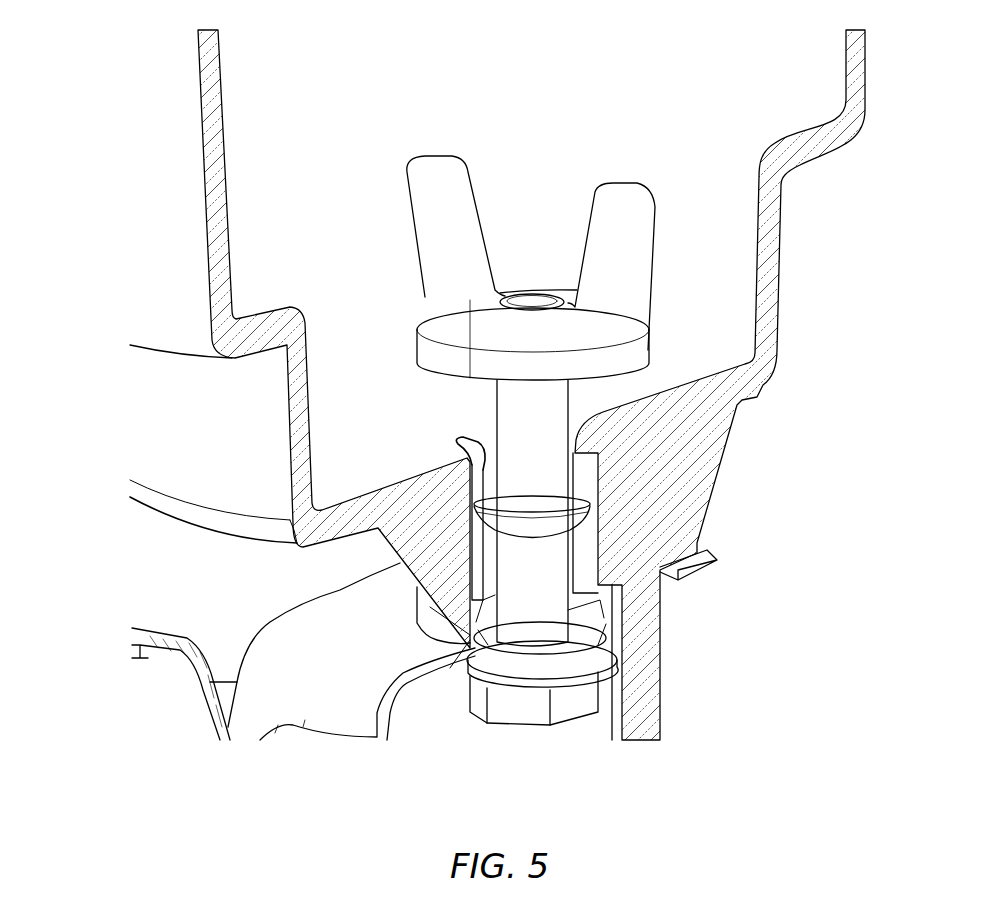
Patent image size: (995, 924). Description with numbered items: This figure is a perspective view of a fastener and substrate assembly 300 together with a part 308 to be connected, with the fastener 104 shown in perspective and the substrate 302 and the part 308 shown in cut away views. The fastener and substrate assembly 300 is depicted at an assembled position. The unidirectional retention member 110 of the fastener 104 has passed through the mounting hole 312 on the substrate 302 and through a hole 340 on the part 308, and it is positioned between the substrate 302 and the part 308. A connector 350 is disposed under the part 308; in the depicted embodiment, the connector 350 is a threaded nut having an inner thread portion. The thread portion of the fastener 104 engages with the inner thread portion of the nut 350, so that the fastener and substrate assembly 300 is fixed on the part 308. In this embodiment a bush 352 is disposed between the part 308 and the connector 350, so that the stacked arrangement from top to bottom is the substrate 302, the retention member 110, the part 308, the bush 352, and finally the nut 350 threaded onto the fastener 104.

The fastener and substrate assembly 300 is at (497, 385).
The substrate 302 is at (683, 373).
The fastener 104 is at (643, 292).
The mounting hole 312 is at (482, 449).
The unidirectional retention member 110 is at (580, 527).
The hole 340 is at (465, 668).
The bush 352 is at (532, 674).
The connector 350 is at (583, 708).
The part 308 is at (353, 697).